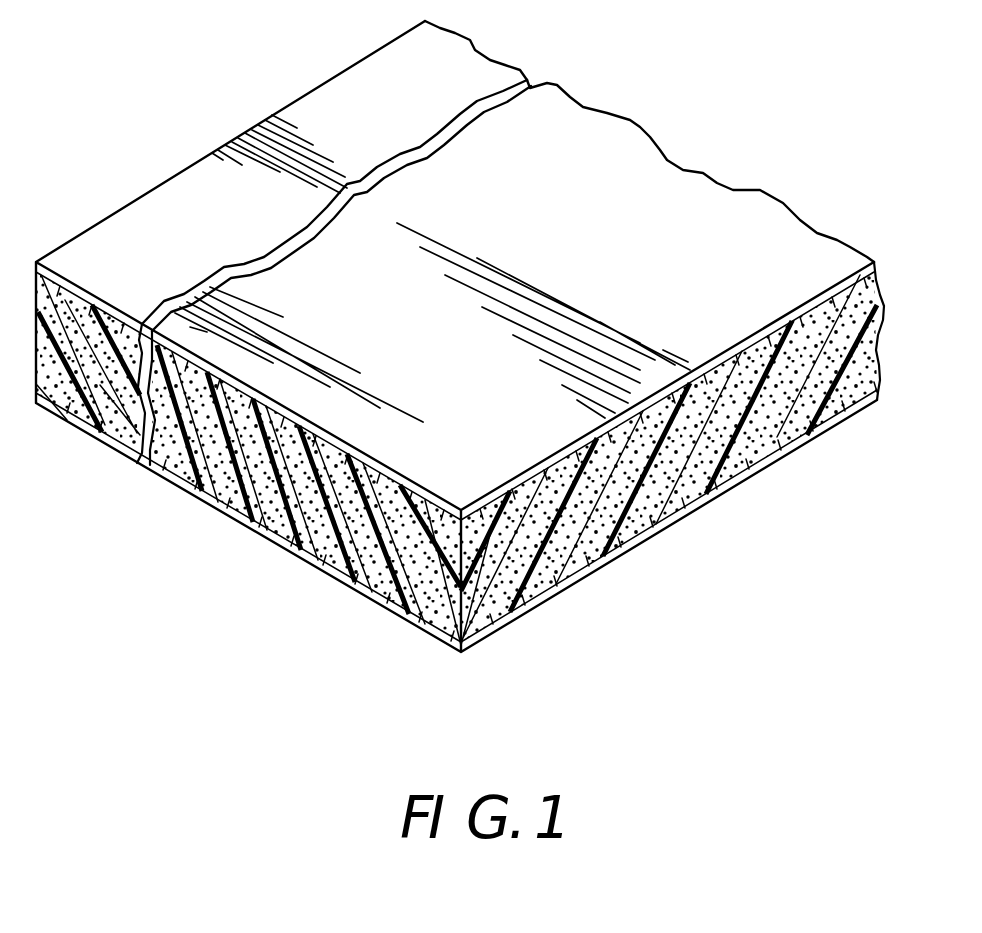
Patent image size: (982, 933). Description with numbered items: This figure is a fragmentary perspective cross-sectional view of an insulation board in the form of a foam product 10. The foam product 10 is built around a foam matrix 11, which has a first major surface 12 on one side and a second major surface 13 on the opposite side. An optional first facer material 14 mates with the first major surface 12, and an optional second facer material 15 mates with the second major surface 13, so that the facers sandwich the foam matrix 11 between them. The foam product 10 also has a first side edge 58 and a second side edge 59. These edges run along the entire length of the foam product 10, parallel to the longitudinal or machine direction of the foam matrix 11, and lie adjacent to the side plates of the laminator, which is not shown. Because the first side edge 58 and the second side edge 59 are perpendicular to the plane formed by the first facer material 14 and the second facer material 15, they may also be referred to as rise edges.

The foam product 10 is at (207, 137).
The foam matrix 11 is at (588, 553).
The first major surface 12 is at (637, 548).
The second major surface 13 is at (558, 447).
The first facer material 14 is at (713, 503).
The second facer material 15 is at (707, 195).
The first side edge 58 is at (155, 183).
The second side edge 59 is at (522, 568).